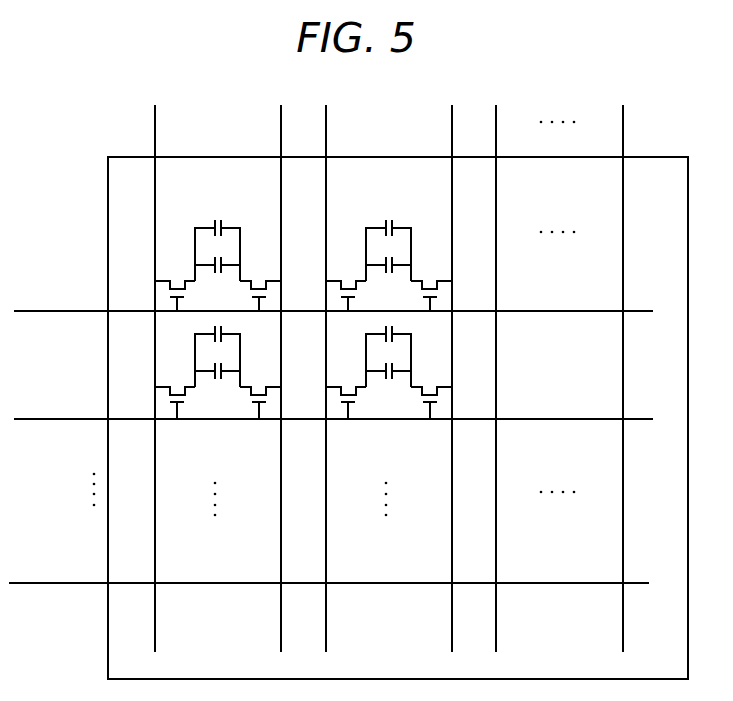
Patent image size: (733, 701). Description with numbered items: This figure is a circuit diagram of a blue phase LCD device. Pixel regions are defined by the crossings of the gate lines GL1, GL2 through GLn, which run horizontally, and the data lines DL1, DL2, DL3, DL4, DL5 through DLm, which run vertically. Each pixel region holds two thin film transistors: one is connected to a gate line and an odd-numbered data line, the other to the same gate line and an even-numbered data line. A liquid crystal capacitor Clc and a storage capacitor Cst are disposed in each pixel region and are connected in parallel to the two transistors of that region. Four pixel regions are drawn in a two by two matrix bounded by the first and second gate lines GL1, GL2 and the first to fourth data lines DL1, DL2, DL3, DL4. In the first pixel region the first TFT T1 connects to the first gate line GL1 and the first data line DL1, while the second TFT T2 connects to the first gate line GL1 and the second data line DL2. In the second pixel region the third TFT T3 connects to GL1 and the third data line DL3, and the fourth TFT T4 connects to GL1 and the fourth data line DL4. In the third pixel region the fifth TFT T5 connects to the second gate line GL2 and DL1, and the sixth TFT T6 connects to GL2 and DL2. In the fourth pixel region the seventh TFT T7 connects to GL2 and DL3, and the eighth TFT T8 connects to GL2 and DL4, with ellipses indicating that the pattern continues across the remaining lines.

The first data line DL1 is at (157, 366).
The second data line DL2 is at (285, 366).
The third data line DL3 is at (329, 366).
The fourth data line DL4 is at (453, 366).
The fifth data line DL5 is at (500, 366).
The mth data line DLm is at (627, 365).
The first gate line GL1 is at (333, 300).
The second gate line GL2 is at (333, 408).
The nth gate line GLn is at (329, 571).
The first TFT T1 is at (180, 296).
The second TFT T2 is at (256, 296).
The third TFT T3 is at (352, 296).
The fourth TFT T4 is at (424, 296).
The fifth TFT T5 is at (180, 403).
The sixth TFT T6 is at (256, 403).
The seventh TFT T7 is at (352, 403).
The eighth TFT T8 is at (424, 403).
The liquid crystal capacitor Clc is at (217, 243).
The storage capacitor Cst is at (217, 257).